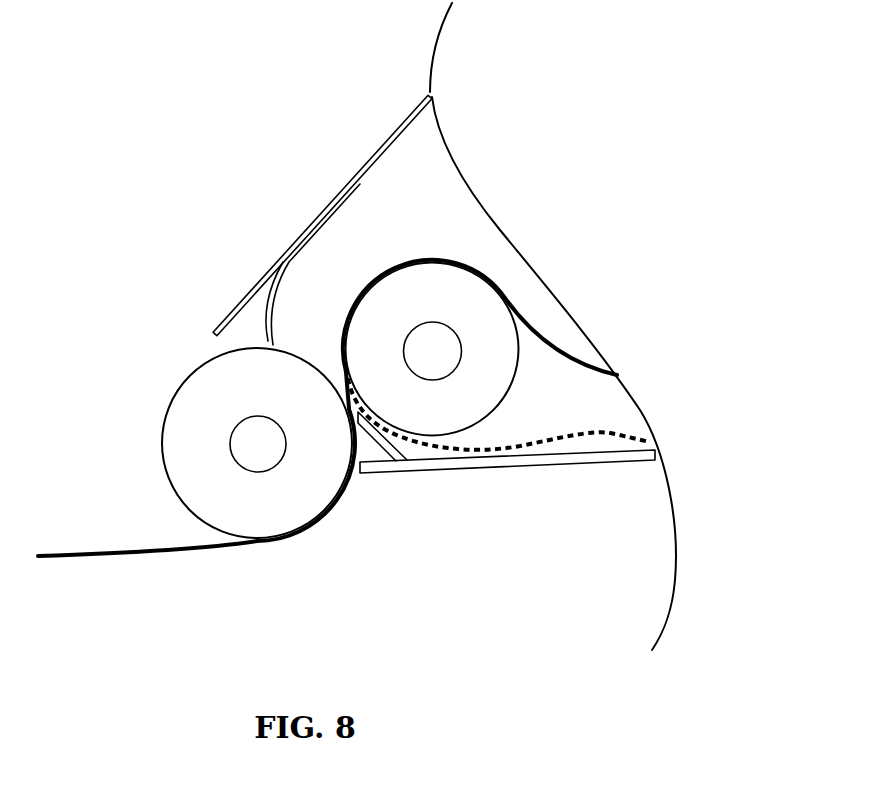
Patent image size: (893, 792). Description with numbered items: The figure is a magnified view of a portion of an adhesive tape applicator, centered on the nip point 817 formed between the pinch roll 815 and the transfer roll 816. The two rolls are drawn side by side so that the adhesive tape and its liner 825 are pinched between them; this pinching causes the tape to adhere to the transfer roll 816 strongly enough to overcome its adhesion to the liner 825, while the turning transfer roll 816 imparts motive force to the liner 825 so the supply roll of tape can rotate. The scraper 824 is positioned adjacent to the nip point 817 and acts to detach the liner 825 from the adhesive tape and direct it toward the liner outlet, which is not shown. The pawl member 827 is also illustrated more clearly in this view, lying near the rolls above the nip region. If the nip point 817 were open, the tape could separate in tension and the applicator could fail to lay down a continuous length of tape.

The pinch roll 815 is at (473, 310).
The transfer roll 816 is at (193, 390).
The nip point 817 is at (315, 328).
The scraper 824 is at (375, 430).
The liner 825 is at (603, 432).
The pawl member 827 is at (248, 308).